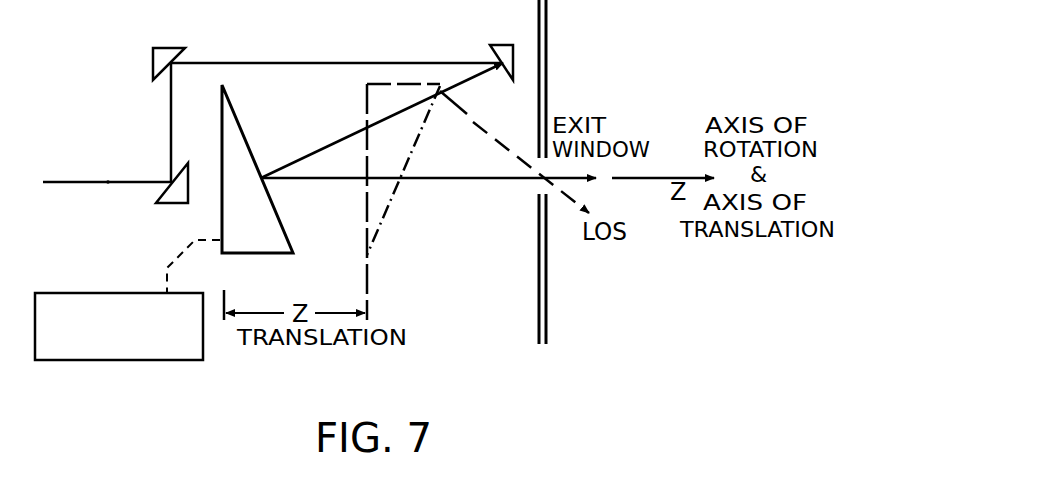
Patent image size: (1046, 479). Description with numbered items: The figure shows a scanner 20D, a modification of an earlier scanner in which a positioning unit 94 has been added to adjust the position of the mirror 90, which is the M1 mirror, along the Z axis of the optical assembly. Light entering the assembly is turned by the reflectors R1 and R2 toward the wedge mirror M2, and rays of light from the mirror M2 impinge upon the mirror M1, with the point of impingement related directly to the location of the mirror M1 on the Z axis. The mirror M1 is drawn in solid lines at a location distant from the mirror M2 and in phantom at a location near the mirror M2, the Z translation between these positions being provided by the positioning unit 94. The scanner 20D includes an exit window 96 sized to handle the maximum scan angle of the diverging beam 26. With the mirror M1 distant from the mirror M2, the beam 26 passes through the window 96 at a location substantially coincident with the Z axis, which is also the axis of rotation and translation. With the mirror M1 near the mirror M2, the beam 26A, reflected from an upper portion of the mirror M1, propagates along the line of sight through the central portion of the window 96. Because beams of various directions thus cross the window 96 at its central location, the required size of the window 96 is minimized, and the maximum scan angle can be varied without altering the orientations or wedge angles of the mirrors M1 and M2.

The scanner 20D is at (294, 37).
The beam 26 is at (462, 180).
The beam 26A is at (471, 108).
The mirror 90 is at (247, 256).
The positioning unit 94 is at (117, 288).
The exit window 96 is at (549, 312).
The reflector R1 is at (172, 198).
The reflector R2 is at (169, 48).
The mirror M1 is at (375, 238).
The mirror M2 is at (502, 46).